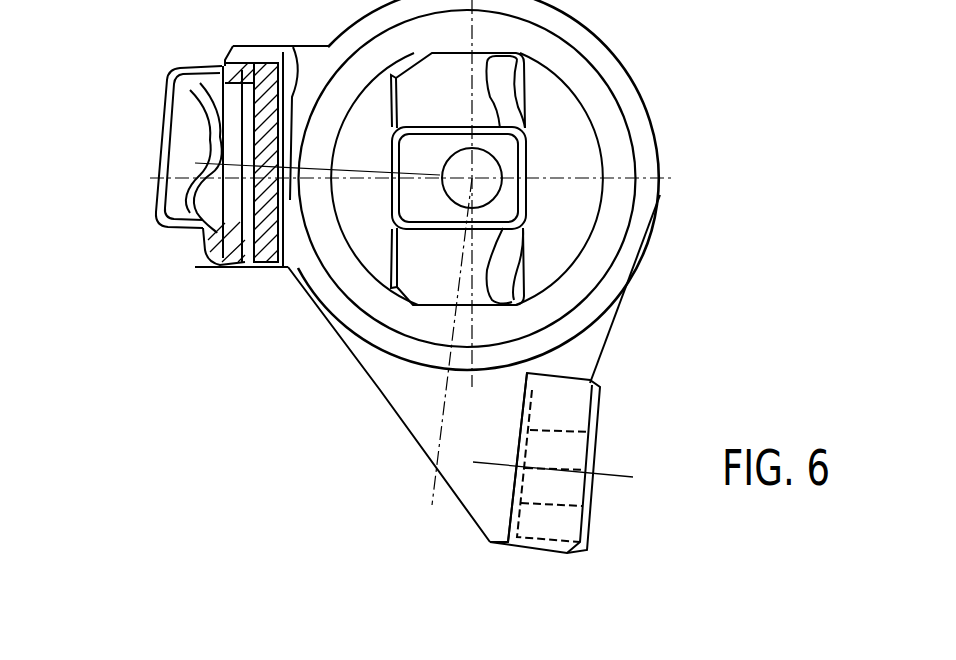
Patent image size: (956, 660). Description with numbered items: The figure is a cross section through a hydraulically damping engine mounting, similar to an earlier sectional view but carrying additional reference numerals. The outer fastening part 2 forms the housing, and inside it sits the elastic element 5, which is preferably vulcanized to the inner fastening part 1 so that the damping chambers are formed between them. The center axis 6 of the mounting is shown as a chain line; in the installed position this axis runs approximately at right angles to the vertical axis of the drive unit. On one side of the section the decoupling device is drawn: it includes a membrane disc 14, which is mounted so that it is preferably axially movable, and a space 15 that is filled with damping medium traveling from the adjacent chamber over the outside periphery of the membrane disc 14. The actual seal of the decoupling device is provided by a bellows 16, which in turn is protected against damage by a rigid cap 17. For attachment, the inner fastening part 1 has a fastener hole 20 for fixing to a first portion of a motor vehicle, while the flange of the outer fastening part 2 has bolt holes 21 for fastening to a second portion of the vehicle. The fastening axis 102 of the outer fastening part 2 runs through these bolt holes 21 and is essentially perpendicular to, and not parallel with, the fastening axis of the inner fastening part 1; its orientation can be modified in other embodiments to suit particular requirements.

The inner fastening part 1 is at (503, 152).
The outer fastening part 2 is at (573, 352).
The elastic element 5 is at (478, 78).
The center axis 6 is at (383, 350).
The membrane disc 14 is at (195, 267).
The space 15 is at (233, 158).
The bellows 16 is at (183, 67).
The rigid cap 17 is at (160, 125).
The fastener hole 20 is at (500, 192).
The bolt holes 21 is at (600, 435).
The fastening axis 102 is at (607, 478).